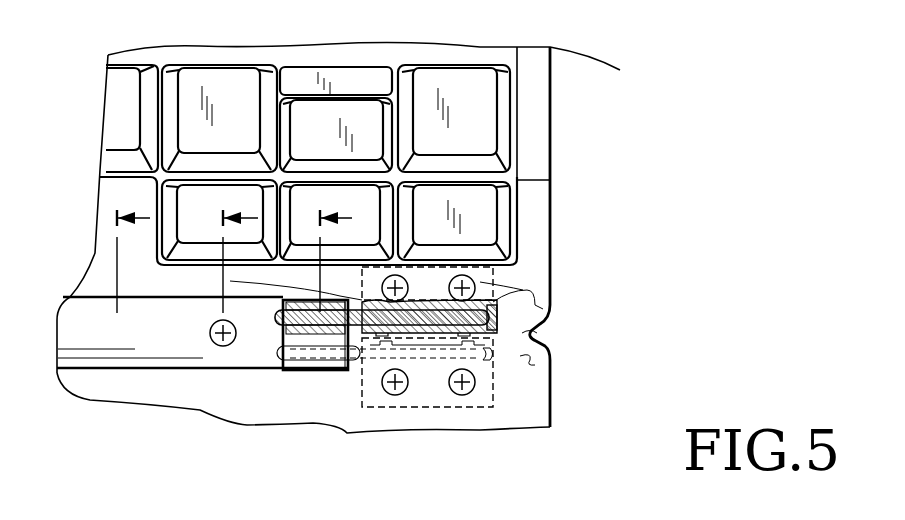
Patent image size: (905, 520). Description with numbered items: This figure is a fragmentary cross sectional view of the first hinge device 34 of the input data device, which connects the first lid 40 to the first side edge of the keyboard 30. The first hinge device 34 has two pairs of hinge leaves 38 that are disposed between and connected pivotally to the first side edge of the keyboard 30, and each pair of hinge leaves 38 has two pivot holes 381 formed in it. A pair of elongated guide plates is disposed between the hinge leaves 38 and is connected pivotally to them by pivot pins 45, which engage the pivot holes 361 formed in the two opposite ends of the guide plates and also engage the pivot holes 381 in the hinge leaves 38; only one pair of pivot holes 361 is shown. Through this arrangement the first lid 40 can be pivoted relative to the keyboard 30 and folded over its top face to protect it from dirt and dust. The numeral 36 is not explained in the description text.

The keyboard 30 is at (90, 252).
The first hinge device 34 is at (77, 315).
The sliding block 36 is at (325, 370).
The pivot hole 361 is at (298, 375).
The hinge leaf 38 is at (523, 272).
The pivot hole 381 is at (552, 305).
The first lid 40 is at (210, 402).
The pivot pin 45 is at (537, 333).